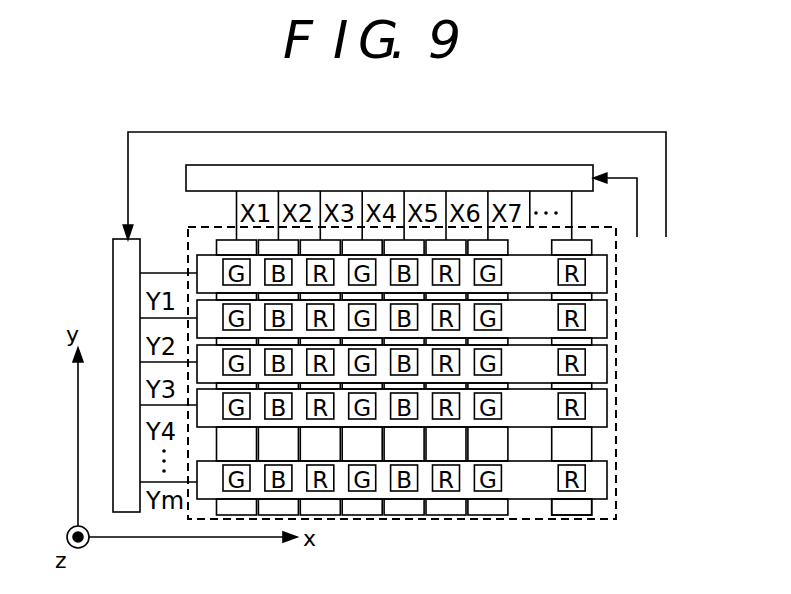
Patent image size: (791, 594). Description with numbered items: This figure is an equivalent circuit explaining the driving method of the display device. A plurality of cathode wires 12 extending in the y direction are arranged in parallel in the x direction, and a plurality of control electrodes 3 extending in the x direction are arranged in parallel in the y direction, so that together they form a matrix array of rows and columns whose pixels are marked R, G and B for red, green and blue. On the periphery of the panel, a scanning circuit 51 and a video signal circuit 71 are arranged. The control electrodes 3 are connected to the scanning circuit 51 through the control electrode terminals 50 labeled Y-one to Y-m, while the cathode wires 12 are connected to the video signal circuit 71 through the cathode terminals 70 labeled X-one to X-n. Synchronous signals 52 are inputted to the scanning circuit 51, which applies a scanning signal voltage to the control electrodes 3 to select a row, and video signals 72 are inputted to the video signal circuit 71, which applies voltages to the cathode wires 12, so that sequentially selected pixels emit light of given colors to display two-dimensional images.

The control electrode 3 is at (602, 358).
The cathode wire 12 is at (575, 507).
The control electrode terminal 50 is at (165, 273).
The scanning circuit 51 is at (113, 266).
The synchronous signal 52 is at (672, 255).
The cathode terminal 70 is at (571, 196).
The video signal circuit 71 is at (248, 178).
The video signal 72 is at (643, 255).